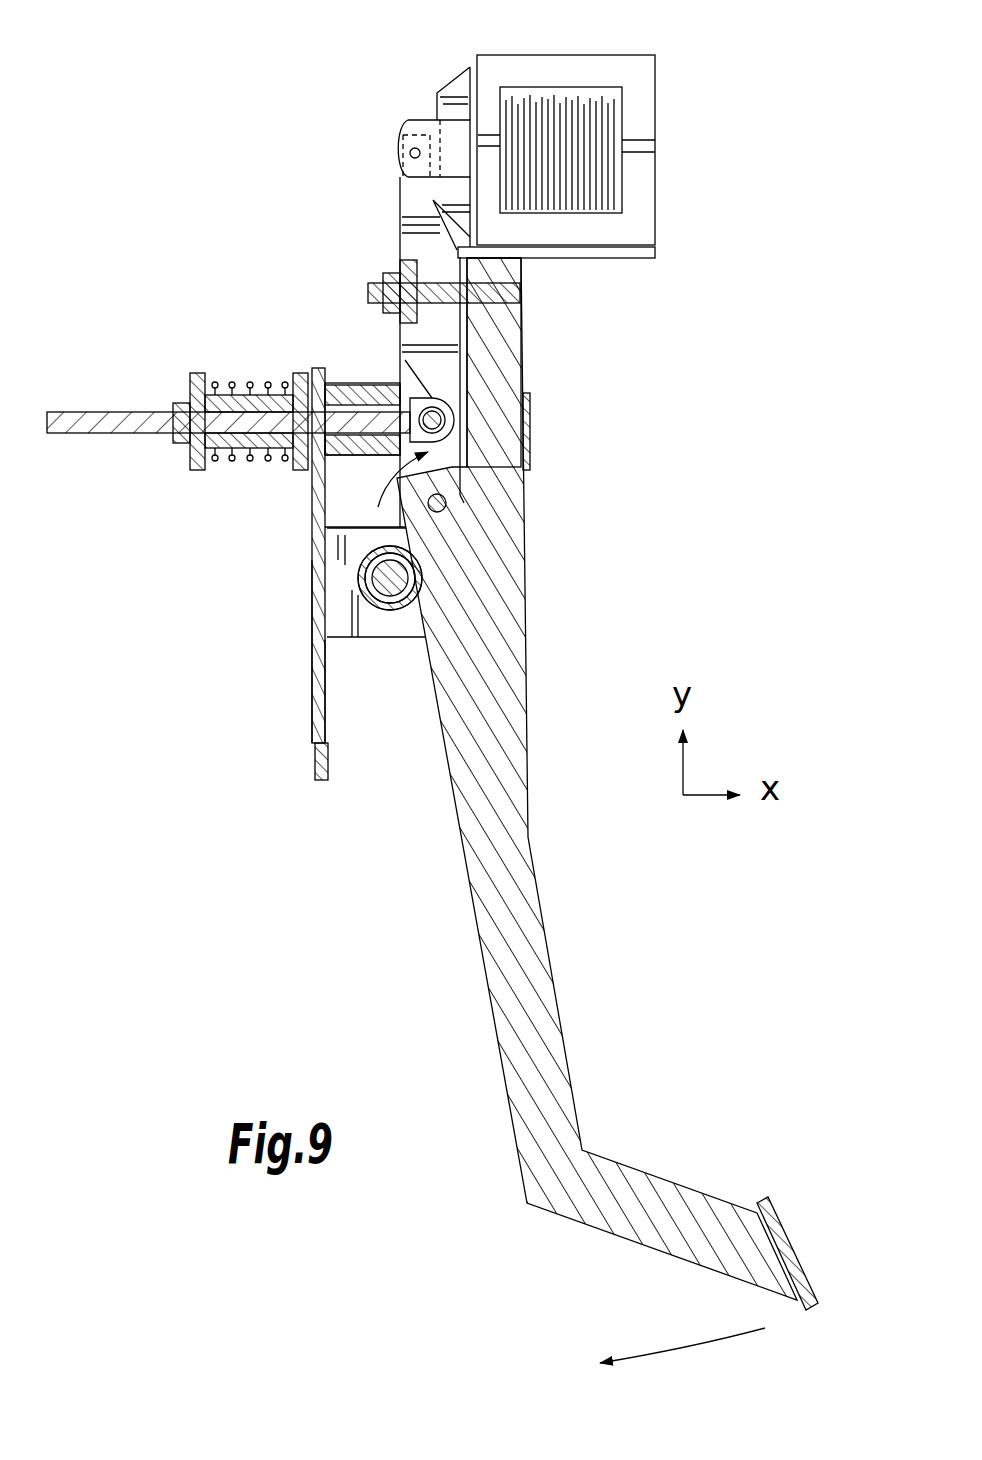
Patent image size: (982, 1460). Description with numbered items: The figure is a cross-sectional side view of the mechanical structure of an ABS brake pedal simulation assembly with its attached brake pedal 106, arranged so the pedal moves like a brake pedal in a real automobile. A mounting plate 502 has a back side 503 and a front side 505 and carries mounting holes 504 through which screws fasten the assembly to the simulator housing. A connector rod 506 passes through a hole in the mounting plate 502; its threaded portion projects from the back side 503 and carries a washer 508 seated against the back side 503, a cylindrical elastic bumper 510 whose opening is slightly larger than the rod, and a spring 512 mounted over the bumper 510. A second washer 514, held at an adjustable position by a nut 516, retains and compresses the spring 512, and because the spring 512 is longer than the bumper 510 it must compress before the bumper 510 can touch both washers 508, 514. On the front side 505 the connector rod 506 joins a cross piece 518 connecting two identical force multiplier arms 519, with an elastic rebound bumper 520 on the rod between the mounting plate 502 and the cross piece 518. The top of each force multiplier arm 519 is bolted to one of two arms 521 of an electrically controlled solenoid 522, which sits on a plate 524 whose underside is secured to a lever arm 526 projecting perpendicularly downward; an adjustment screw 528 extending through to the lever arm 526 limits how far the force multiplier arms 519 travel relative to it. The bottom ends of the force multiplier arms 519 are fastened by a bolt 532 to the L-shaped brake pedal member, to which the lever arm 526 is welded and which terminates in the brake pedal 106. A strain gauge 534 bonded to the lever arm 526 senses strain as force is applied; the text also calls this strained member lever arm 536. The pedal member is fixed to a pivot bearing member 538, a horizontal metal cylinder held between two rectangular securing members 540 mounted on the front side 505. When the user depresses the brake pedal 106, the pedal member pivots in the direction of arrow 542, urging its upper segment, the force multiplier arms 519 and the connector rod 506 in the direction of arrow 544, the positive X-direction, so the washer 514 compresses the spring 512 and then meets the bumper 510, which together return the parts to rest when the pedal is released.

The brake pedal 106 is at (543, 917).
The mounting plate 502 is at (310, 688).
The back side 503 is at (310, 642).
The mounting holes 504 is at (313, 755).
The front side 505 is at (330, 733).
The connector rod 506 is at (66, 433).
The washer 508 is at (300, 373).
The elastic bumper 510 is at (237, 458).
The spring 512 is at (265, 392).
The washer 514 is at (193, 373).
The nut 516 is at (182, 405).
The cross piece 518 is at (400, 350).
The force multiplier arms 519 is at (400, 187).
The elastic rebound bumper 520 is at (333, 375).
The arms of solenoid 521 is at (413, 120).
The solenoid 522 is at (543, 55).
The plate 524 is at (628, 258).
The lever arm 526 is at (522, 322).
The adjustment screw 528 is at (375, 282).
The bolt 532 is at (447, 506).
The strain gauge 534 is at (530, 440).
The lever arm 536 is at (780, 1213).
The pivot bearing member 538 is at (373, 617).
The securing members 540 is at (347, 637).
The arrow 542 is at (698, 1347).
The arrow 544 is at (385, 492).